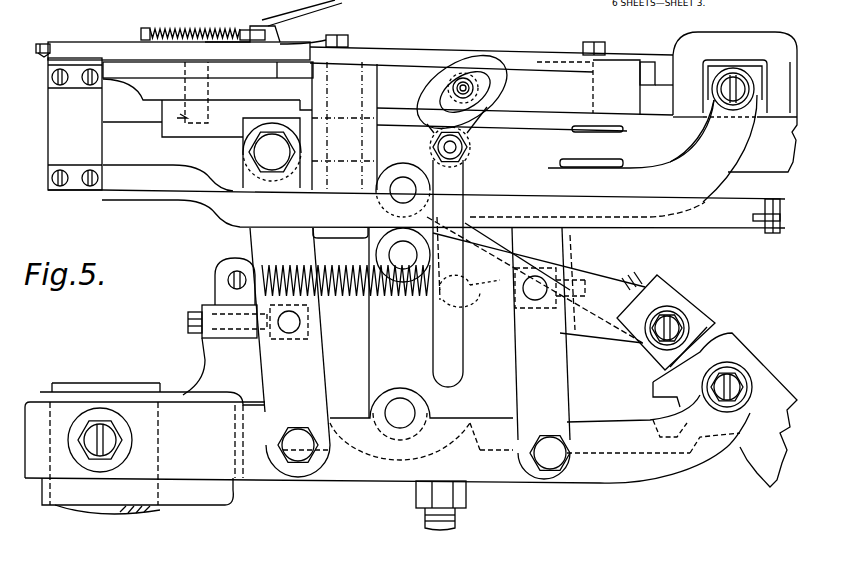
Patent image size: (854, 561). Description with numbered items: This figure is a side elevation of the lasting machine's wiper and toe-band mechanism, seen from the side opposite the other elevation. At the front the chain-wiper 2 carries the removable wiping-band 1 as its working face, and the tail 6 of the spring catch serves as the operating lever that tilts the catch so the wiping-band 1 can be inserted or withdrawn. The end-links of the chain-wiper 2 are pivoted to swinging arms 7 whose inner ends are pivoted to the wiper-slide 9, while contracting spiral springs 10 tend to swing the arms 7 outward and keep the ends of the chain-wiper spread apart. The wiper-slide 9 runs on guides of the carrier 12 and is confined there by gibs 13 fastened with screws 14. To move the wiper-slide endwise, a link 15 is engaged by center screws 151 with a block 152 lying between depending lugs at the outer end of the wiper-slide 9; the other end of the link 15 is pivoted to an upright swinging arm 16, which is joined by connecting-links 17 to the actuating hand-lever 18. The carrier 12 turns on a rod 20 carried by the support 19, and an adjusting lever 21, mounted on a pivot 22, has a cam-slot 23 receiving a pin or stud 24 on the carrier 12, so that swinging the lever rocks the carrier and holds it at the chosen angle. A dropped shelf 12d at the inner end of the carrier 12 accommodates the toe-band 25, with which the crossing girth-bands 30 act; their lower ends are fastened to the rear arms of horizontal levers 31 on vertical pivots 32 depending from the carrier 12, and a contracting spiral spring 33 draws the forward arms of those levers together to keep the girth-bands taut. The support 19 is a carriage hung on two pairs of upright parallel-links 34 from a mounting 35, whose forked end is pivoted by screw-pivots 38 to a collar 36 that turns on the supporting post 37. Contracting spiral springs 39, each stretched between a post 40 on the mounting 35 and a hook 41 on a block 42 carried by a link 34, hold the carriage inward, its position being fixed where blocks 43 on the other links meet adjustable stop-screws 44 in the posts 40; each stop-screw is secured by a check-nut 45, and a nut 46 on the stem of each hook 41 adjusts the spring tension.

The wiping-band 1 is at (41, 52).
The chain-wiper 2 is at (52, 43).
The tail 6 is at (298, 13).
The swinging arms 7 is at (93, 50).
The wiper-slide 9 is at (403, 49).
The contracting spiral springs 10 is at (170, 33).
The carrier 12 is at (620, 108).
The shelf 12d is at (203, 133).
The gibs 13 is at (517, 54).
The screws 14 is at (341, 34).
The link 15 is at (658, 175).
The upright swinging arm 16 is at (380, 353).
The connecting-links 17 is at (598, 335).
The actuating hand-lever 18 is at (763, 466).
The support 19 is at (493, 130).
The rod 20 is at (788, 127).
The adjusting lever 21 is at (468, 372).
The pivot 22 is at (437, 147).
The cam-slot 23 is at (430, 103).
The pin or stud 24 is at (463, 72).
The toe-band 25 is at (141, 125).
The girth-bands 30 is at (93, 143).
The horizontal levers 31 is at (178, 196).
The vertical pivots 32 is at (347, 235).
The contracting spiral spring 33 is at (768, 229).
The upright parallel-links 34 is at (249, 240).
The mounting 35 is at (595, 488).
The collar 36 is at (65, 495).
The supporting post 37 is at (80, 395).
The screw-pivots 38 is at (114, 440).
The contracting spiral springs 39 is at (363, 296).
The post 40 is at (213, 295).
The hook 41 is at (497, 294).
The block 42 is at (527, 313).
The blocks 43 is at (297, 340).
The stop-screws 44 is at (187, 318).
The check-nut 45 is at (200, 338).
The nut 46 is at (563, 327).
The center screws 151 is at (727, 112).
The block 152 is at (710, 68).